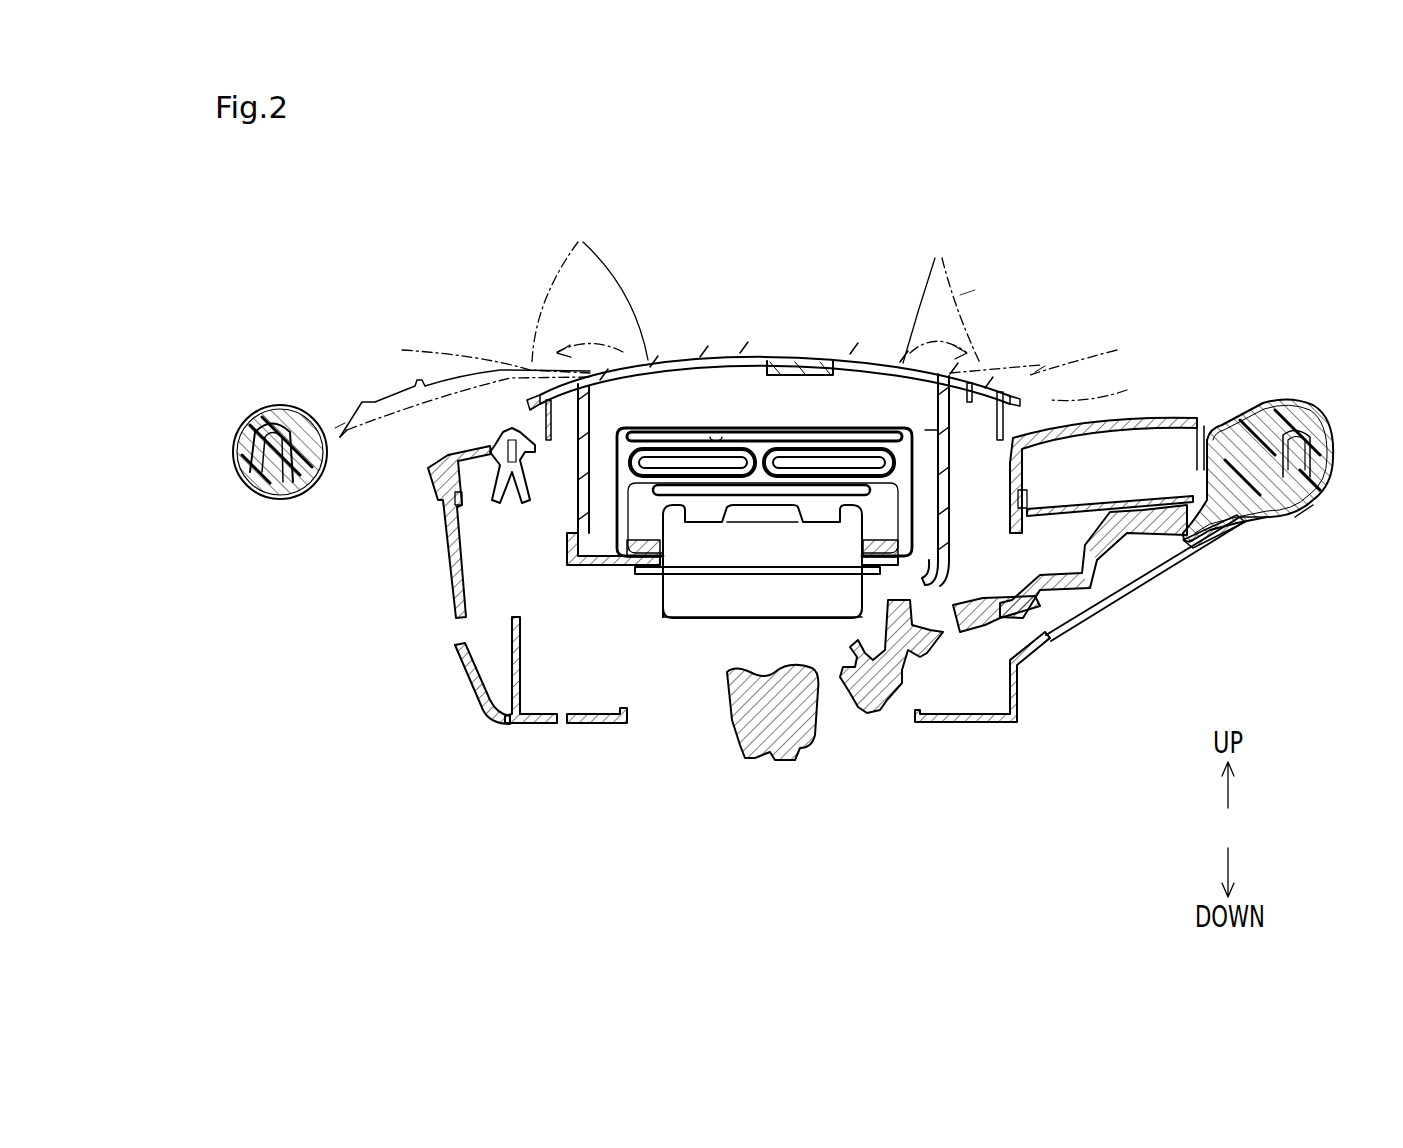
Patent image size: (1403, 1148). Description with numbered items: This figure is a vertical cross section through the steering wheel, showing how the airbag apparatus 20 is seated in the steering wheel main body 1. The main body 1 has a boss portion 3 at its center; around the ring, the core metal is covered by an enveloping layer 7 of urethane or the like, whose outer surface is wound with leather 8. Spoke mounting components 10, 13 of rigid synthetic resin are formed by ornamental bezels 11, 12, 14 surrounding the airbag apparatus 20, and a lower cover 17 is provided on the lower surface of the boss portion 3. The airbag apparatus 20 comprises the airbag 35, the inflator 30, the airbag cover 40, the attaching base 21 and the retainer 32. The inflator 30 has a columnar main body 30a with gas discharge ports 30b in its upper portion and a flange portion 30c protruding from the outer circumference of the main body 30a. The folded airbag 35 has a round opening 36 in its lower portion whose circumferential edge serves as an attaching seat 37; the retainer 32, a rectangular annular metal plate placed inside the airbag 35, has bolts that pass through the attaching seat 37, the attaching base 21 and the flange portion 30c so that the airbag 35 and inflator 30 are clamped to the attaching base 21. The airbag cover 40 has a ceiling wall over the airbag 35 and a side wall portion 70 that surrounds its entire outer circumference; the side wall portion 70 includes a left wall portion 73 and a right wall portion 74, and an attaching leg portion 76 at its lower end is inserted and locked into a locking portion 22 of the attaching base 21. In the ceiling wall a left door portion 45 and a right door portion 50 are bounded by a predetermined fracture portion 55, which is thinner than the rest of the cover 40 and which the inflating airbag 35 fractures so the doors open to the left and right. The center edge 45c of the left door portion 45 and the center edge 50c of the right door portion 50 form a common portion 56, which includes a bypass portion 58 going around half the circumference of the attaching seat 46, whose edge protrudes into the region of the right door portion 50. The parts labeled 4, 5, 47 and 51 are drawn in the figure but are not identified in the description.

The steering wheel main body 1 is at (898, 742).
The boss portion 3 is at (258, 487).
The hatched body portion 4 is at (788, 730).
The strip member 5 is at (1093, 578).
The enveloping layer 7 is at (1267, 515).
The leather 8 is at (1305, 520).
The spoke mounting component 10 is at (1156, 423).
The bezel 11 is at (1157, 413).
The bezel 12 is at (433, 507).
The spoke mounting component 13 is at (449, 460).
The bezel 14 is at (537, 428).
The lower cover 17 is at (1020, 703).
The airbag apparatus 20 is at (968, 288).
The attaching base 21 is at (600, 570).
The locking portion 22 is at (980, 605).
The inflator 30 is at (700, 585).
The main body 30a is at (833, 600).
The gas discharge ports 30b is at (778, 515).
The flange portion 30c is at (733, 582).
The retainer 32 is at (577, 512).
The airbag 35 is at (710, 360).
The opening 36 is at (672, 598).
The attaching seat 37 is at (645, 598).
The airbag cover 40 is at (733, 322).
The left door portion 45 is at (590, 285).
The center edge 45c is at (345, 450).
The attaching seat 46 is at (806, 360).
The heater frame 47 is at (590, 384).
The right door portion 50 is at (941, 293).
The center edge 50c is at (1054, 375).
The wall tab 51 is at (936, 378).
The predetermined fracture portion 55 is at (715, 289).
The common portion 56 is at (715, 289).
The bypass portion 58 is at (340, 420).
The side wall portion 70 is at (782, 614).
The left wall portion 73 is at (565, 540).
The right wall portion 74 is at (1033, 592).
The attaching leg portion 76 is at (935, 583).